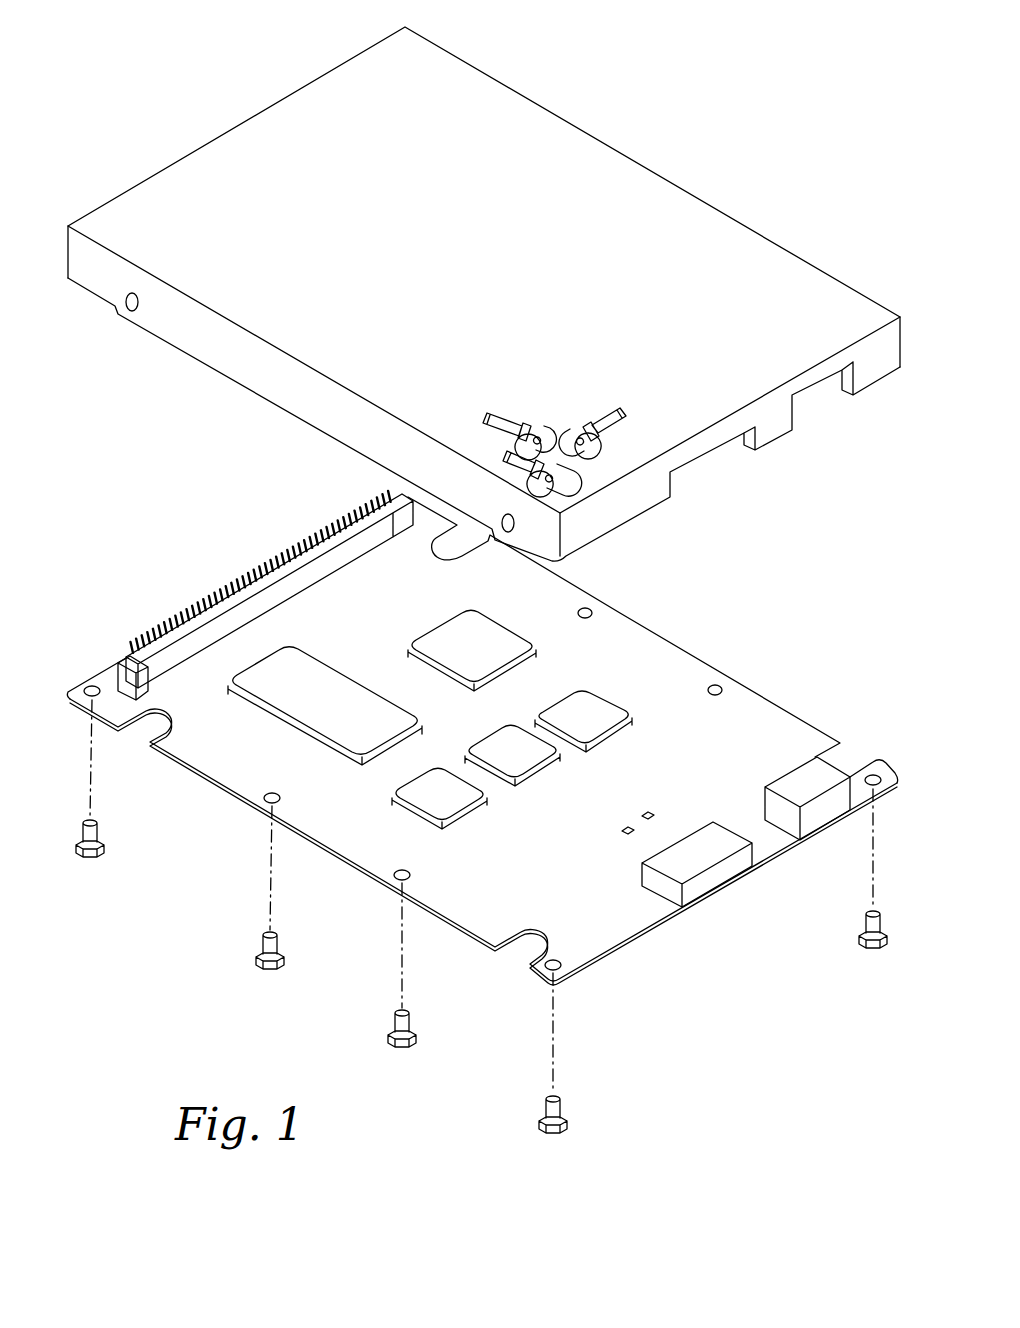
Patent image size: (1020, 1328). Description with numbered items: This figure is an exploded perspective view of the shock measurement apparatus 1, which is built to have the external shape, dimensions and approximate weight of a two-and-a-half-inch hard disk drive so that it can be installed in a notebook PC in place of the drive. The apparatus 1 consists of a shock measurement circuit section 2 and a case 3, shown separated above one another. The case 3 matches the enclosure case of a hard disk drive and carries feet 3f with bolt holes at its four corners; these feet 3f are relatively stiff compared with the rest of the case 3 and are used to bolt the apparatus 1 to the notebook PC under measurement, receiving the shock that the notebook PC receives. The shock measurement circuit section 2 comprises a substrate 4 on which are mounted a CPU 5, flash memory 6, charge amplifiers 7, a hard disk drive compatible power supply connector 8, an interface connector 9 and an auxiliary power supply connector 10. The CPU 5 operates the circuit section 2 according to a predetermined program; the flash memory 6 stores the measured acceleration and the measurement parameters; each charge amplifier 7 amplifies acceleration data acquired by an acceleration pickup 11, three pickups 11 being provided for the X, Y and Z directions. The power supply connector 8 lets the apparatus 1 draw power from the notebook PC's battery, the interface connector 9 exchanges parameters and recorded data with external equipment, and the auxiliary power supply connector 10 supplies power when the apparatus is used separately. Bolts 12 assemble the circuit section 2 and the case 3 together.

The shock measurement apparatus 1 is at (121, 109).
The shock measurement circuit section 2 is at (85, 630).
The case 3 is at (663, 124).
The feet 3f is at (128, 318).
The substrate 4 is at (704, 662).
The central processing unit (CPU) 5 is at (439, 624).
The flash memory 6 is at (268, 710).
The charge amplifier 7 is at (468, 812).
The hard disk drive compatible power supply connector 8 is at (230, 578).
The interface connector 9 is at (710, 890).
The auxiliary power supply connector 10 is at (827, 812).
The acceleration pickup 11 is at (507, 412).
The bolts 12 is at (499, 941).